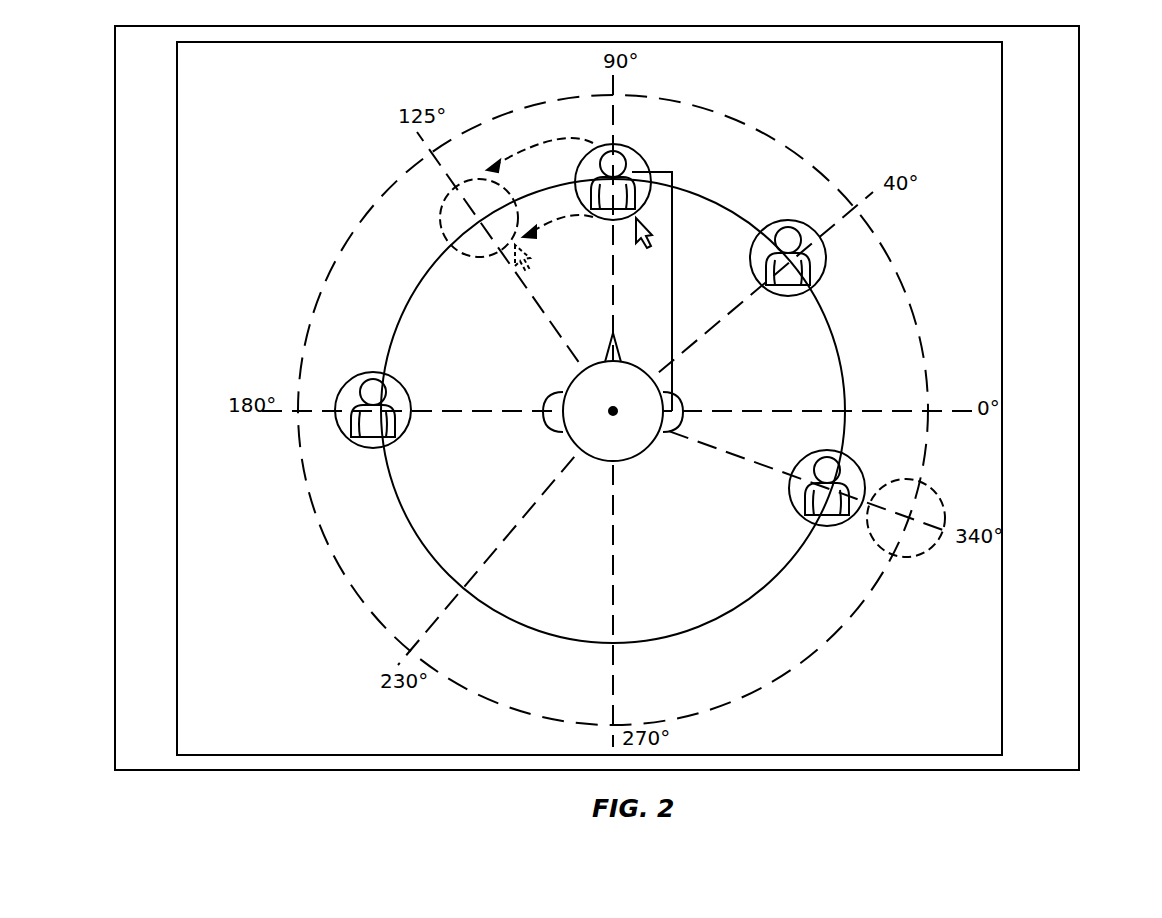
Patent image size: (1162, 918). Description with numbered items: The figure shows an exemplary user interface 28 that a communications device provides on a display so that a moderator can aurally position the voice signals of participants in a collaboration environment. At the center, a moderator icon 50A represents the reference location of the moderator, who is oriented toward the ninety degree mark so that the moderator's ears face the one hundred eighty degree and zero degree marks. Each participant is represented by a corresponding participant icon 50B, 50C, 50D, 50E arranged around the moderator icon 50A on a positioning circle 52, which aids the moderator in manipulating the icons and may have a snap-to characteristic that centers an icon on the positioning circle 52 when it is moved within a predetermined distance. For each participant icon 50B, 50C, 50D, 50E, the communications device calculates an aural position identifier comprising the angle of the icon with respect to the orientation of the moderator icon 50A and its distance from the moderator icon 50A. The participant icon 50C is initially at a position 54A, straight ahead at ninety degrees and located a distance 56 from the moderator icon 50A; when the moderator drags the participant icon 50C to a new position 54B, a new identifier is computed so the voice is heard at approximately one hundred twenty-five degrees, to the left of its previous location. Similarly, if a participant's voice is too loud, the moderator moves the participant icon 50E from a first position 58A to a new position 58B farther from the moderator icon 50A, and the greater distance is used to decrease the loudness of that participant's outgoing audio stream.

The user interface 28 is at (1079, 108).
The moderator icon 50A is at (647, 452).
The participant icon 50B is at (405, 435).
The participant icon 50C is at (648, 162).
The participant icon 50D is at (815, 285).
The participant icon 50E is at (858, 462).
The positioning circle 52 is at (395, 333).
The position 54A is at (577, 158).
The new position 54B is at (440, 230).
The distance 56 is at (672, 296).
The first position 58A is at (795, 458).
The new position 58B is at (940, 492).